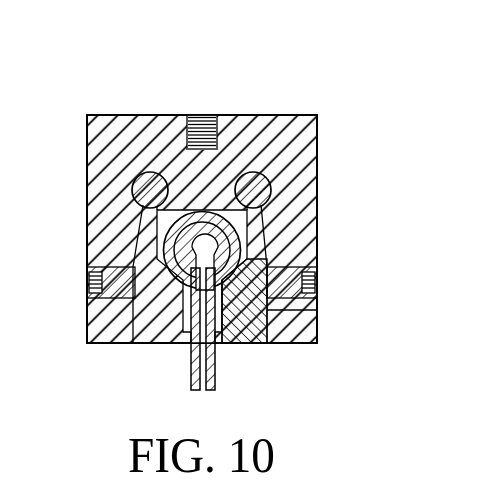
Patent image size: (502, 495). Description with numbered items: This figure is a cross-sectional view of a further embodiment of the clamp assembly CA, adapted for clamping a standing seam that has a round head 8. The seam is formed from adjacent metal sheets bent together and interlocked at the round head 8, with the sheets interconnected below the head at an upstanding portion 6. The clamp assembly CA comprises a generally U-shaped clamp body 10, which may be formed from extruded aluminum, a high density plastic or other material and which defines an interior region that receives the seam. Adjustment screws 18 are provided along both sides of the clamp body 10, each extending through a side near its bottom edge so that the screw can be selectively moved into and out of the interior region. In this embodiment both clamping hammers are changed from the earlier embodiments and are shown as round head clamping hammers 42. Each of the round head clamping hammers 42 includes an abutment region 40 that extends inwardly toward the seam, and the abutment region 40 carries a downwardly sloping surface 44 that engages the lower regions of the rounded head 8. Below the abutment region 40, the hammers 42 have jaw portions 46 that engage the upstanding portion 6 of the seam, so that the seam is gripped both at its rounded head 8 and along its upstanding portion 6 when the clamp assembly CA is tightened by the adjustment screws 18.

The clamp assembly CA is at (322, 106).
The upstanding portion 6 is at (187, 366).
The round head 8 is at (214, 207).
The clamp body 10 is at (317, 160).
The adjustment screws 18 is at (108, 300).
The abutment region 40 is at (244, 350).
The round head clamping hammers 42 is at (257, 343).
The downwardly sloping surface 44 is at (317, 310).
The jaw portions 46 is at (217, 343).